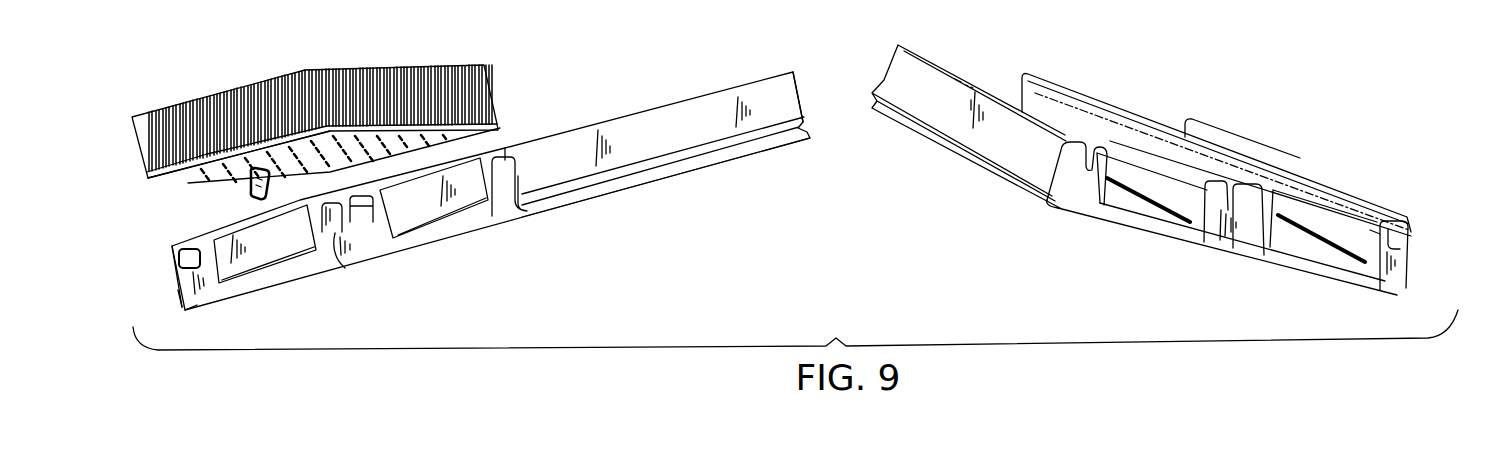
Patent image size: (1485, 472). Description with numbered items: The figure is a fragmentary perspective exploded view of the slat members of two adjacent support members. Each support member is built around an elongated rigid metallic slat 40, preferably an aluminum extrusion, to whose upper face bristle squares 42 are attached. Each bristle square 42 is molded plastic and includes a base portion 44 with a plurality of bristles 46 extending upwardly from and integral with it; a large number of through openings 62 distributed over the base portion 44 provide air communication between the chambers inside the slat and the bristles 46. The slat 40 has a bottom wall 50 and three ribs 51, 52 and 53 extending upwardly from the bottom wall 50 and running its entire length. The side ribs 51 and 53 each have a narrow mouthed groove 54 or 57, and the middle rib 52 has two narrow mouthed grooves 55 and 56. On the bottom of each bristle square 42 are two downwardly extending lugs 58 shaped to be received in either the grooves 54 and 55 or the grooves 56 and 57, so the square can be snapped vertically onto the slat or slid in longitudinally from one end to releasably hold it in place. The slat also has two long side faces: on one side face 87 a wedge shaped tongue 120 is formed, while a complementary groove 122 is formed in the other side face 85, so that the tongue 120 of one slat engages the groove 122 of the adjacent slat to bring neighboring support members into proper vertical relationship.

The slat 40 is at (703, 120).
The bristle square 42 is at (135, 127).
The base portion 44 is at (497, 128).
The bristles 46 is at (447, 75).
The bottom wall 50 is at (447, 238).
The rib 51 is at (172, 246).
The middle rib 52 is at (387, 202).
The rib 53 is at (513, 172).
The groove 54 is at (197, 305).
The groove 55 is at (335, 233).
The groove 56 is at (370, 222).
The groove 57 is at (500, 190).
The lug 58 is at (262, 199).
The through opening 62 is at (190, 168).
The side face 85 is at (775, 107).
The side face 87 is at (178, 265).
The tongue 120 is at (178, 293).
The groove 122 is at (580, 192).